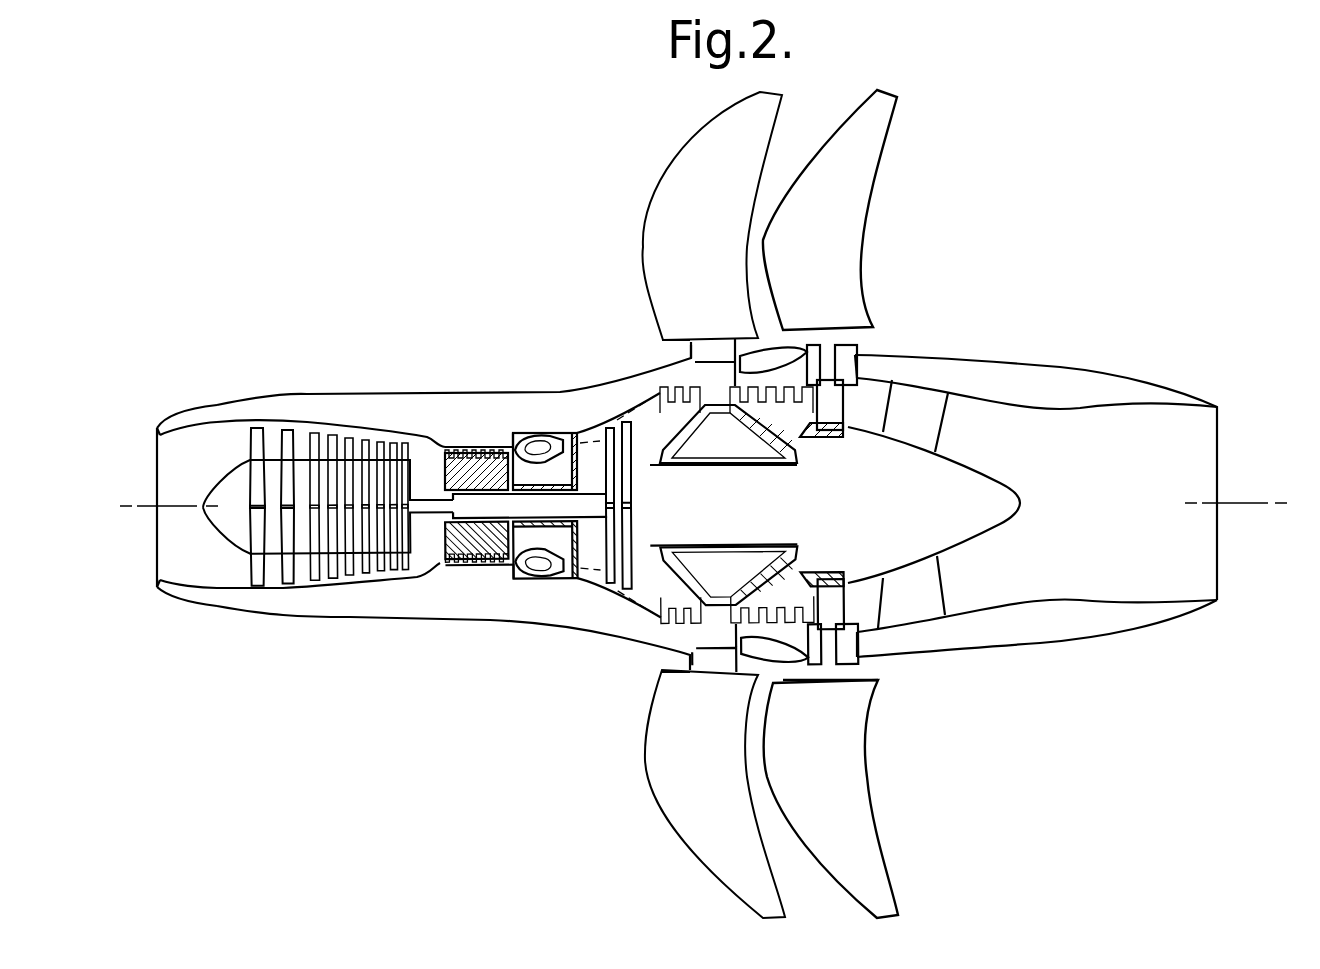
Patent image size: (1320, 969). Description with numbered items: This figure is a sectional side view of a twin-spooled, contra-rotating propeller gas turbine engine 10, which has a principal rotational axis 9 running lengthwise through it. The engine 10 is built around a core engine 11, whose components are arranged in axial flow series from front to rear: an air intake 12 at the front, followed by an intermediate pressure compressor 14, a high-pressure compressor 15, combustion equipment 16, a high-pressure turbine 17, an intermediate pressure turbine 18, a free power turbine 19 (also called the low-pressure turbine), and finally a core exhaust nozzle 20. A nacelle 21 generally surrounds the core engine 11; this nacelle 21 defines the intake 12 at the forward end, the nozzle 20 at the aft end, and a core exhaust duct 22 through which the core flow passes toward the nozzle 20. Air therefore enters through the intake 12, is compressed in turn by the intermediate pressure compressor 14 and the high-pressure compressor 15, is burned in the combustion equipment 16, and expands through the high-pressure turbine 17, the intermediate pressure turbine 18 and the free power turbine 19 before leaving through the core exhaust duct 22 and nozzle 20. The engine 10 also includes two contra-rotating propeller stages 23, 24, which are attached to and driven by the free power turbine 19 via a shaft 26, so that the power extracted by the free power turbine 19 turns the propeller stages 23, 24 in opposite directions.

The principal rotational axis 9 is at (143, 506).
The gas turbine engine 10 is at (322, 235).
The core engine 11 is at (505, 432).
The air intake 12 is at (158, 568).
The intermediate pressure compressor 14 is at (282, 572).
The high-pressure compressor 15 is at (427, 565).
The combustion equipment 16 is at (523, 575).
The high-pressure turbine 17 is at (583, 578).
The intermediate pressure turbine 18 is at (633, 523).
The free power turbine 19 is at (660, 378).
The core exhaust nozzle 20 is at (1217, 600).
The nacelle 21 is at (305, 405).
The core exhaust duct 22 is at (1110, 551).
The propeller stage 23 is at (682, 812).
The propeller stage 24 is at (837, 770).
The shaft 26 is at (753, 463).